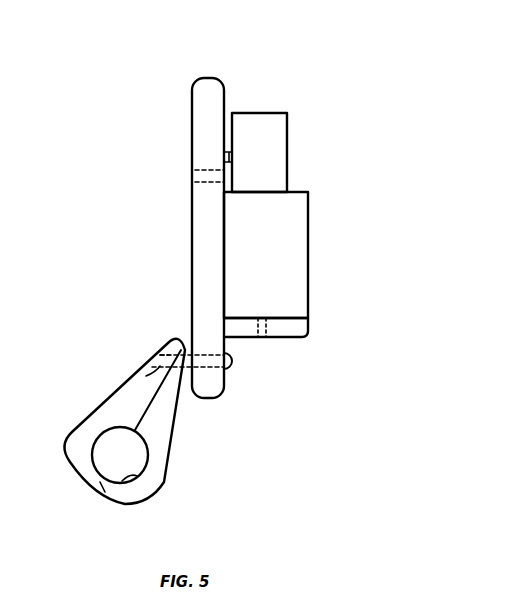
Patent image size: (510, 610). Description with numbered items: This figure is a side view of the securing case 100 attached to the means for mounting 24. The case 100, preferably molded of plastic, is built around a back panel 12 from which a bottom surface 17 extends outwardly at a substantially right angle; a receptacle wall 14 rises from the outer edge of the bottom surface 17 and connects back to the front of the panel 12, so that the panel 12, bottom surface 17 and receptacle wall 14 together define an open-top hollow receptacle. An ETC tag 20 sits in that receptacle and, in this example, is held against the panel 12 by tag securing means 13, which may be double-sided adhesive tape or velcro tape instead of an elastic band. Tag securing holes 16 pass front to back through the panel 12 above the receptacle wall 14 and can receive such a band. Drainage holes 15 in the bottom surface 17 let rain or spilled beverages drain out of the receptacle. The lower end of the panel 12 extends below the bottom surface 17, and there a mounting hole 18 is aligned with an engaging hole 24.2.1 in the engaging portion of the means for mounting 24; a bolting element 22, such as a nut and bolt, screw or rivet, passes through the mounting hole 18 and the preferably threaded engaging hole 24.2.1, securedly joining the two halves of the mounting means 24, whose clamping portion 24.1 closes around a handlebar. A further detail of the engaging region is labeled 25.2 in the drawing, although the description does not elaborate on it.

The securing case 100 is at (292, 75).
The back panel 12 is at (190, 107).
The tag securing means 13 is at (225, 160).
The receptacle wall 14 is at (309, 228).
The drainage holes 15 is at (262, 338).
The tag securing holes 16 is at (194, 180).
The bottom surface 17 is at (309, 331).
The mounting holes 18 is at (210, 353).
The ETC tag 20 is at (288, 138).
The bolting element 22 is at (231, 370).
The means for mounting 24 is at (174, 438).
The clamping portion 24.1 is at (122, 488).
The engaging hole 24.2.1 is at (145, 374).
The bearing pin 25.2 is at (152, 362).